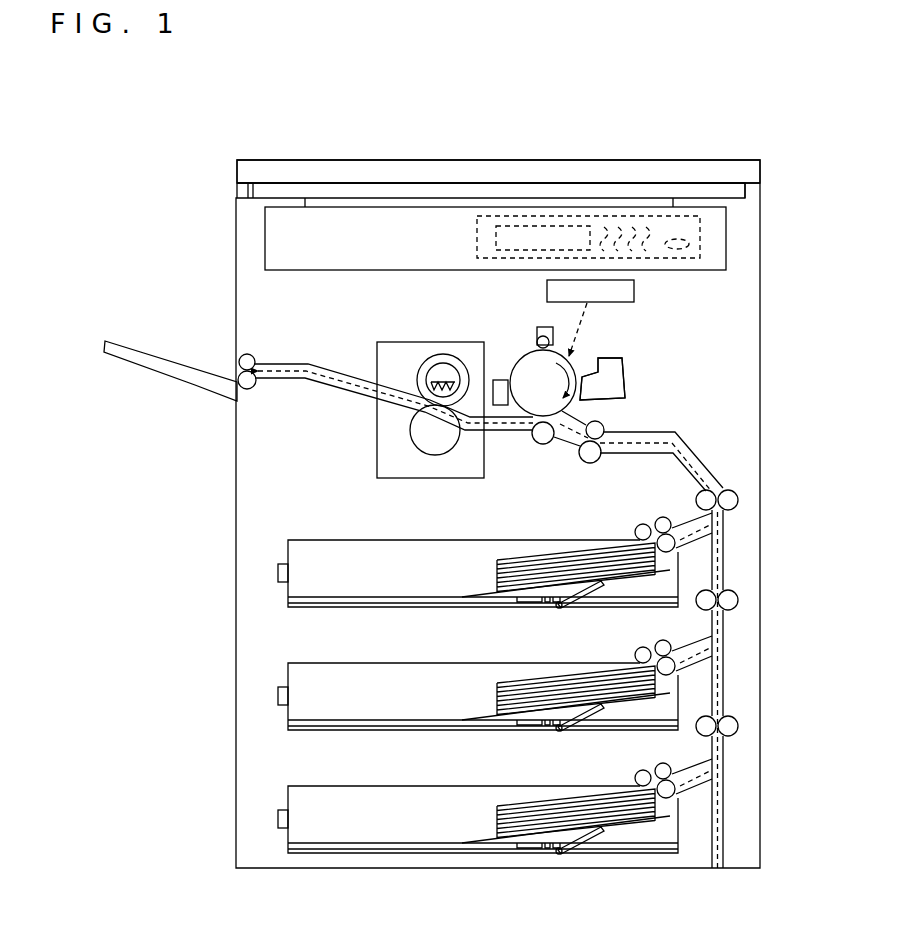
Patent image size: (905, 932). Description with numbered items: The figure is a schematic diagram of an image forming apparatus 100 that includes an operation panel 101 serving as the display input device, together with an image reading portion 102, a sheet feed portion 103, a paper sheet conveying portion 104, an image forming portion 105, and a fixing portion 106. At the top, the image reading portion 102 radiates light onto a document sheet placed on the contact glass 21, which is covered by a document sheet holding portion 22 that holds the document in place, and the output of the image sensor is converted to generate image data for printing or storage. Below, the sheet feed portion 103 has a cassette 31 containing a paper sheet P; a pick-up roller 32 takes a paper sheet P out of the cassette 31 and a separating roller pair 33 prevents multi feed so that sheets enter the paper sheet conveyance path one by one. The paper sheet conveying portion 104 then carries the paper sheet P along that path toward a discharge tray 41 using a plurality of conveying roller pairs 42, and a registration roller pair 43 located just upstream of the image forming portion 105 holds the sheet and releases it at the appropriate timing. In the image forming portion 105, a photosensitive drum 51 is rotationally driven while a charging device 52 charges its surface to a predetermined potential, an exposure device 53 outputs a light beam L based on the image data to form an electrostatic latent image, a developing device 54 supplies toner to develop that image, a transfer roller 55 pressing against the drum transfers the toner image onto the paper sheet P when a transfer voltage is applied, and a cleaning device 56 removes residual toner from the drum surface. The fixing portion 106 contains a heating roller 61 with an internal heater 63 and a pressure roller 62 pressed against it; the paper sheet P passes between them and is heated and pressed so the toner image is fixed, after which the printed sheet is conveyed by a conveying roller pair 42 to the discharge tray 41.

The image forming apparatus 100 is at (235, 160).
The document sheet holding portion 22 is at (400, 172).
The contact glass 21 is at (513, 205).
The operation panel 101 is at (703, 238).
The image reading portion 102 is at (263, 244).
The discharge tray 41 is at (110, 340).
The conveying roller pairs 42 is at (250, 354).
The paper sheet conveying portion 104 is at (705, 456).
The fixing portion 106 is at (375, 449).
The heating roller 61 is at (437, 360).
The heater 63 is at (447, 372).
The pressure roller 62 is at (437, 452).
The photosensitive drum 51 is at (528, 358).
The charging device 52 is at (539, 327).
The cleaning device 56 is at (499, 380).
The exposure device 53 is at (634, 291).
The light beam L is at (580, 334).
The developing device 54 is at (610, 366).
The image forming portion 105 is at (629, 370).
The transfer roller 55 is at (538, 444).
The registration roller pair 43 is at (588, 462).
The sheet feed portion 103 is at (417, 670).
The cassette 31 is at (392, 540).
The paper sheet P is at (497, 560).
The pick-up roller 32 is at (636, 530).
The separating roller pair 33 is at (657, 520).